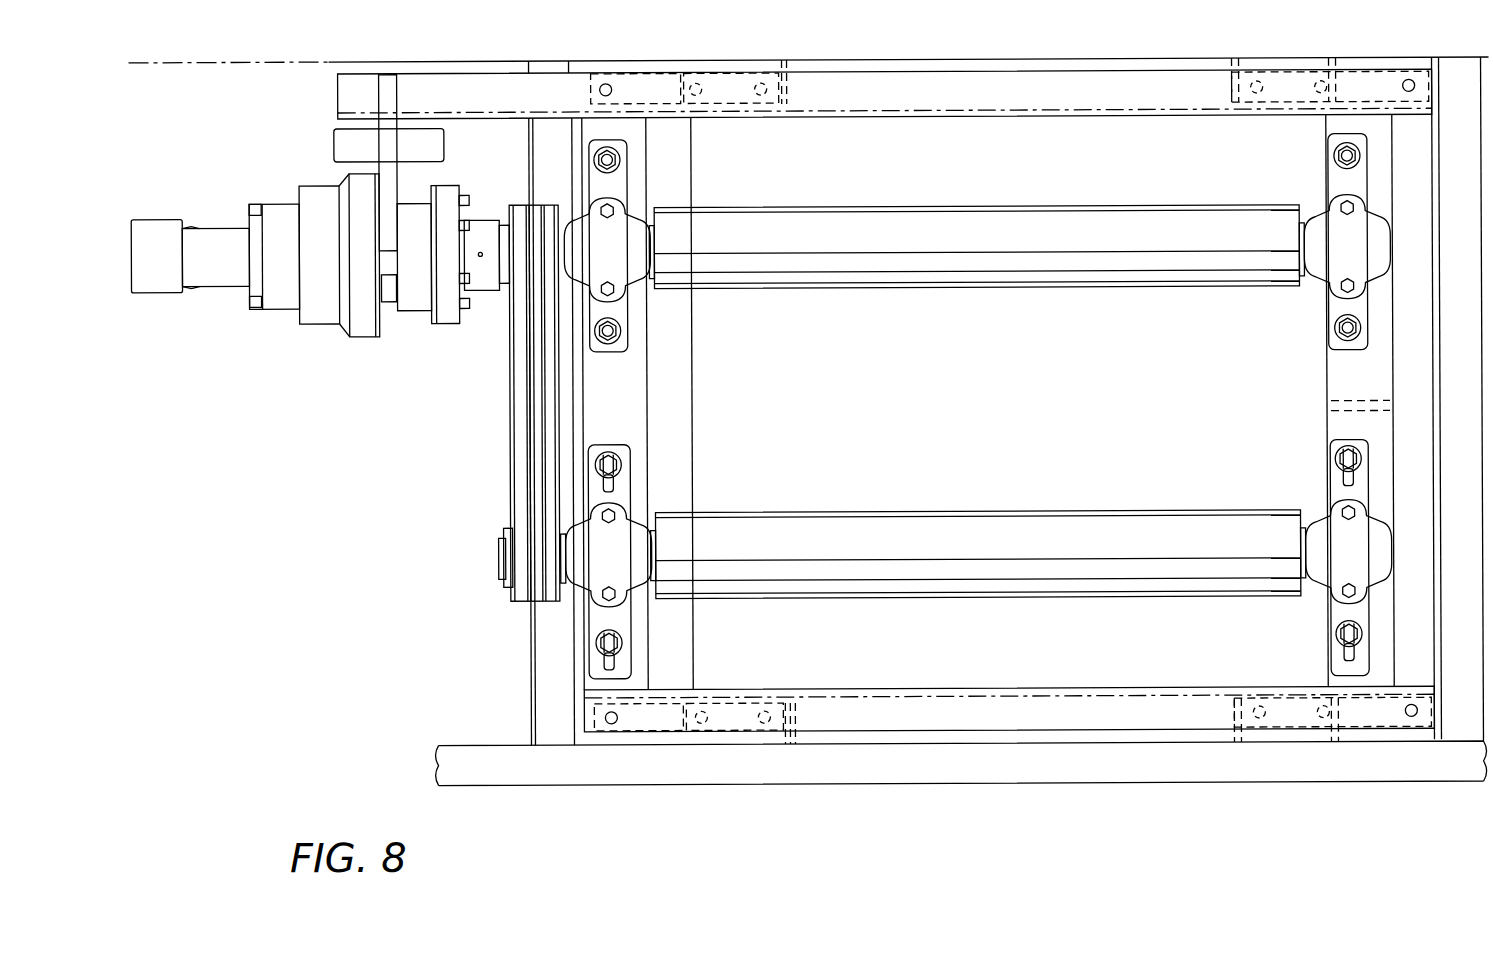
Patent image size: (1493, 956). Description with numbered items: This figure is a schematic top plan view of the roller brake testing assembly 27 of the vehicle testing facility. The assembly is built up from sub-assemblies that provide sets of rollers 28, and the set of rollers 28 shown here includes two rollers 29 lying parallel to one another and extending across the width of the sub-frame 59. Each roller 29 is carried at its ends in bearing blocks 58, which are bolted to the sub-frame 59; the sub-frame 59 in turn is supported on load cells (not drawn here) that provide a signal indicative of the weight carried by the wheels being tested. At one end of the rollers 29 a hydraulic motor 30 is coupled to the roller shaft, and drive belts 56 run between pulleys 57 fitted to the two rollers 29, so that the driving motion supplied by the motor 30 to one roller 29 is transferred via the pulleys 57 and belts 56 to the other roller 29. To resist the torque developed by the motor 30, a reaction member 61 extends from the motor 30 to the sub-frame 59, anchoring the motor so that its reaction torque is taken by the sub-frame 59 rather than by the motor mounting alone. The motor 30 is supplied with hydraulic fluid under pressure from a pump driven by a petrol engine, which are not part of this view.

The roller brake testing assembly 27 is at (388, 705).
The set of rollers 28 is at (912, 645).
The roller 29 is at (1035, 273).
The hydraulic motor 30 is at (318, 307).
The drive belt 56 is at (548, 435).
The pulley 57 is at (503, 288).
The bearing block 58 is at (635, 225).
The sub-frame 59 is at (823, 120).
The reaction member 61 is at (350, 139).